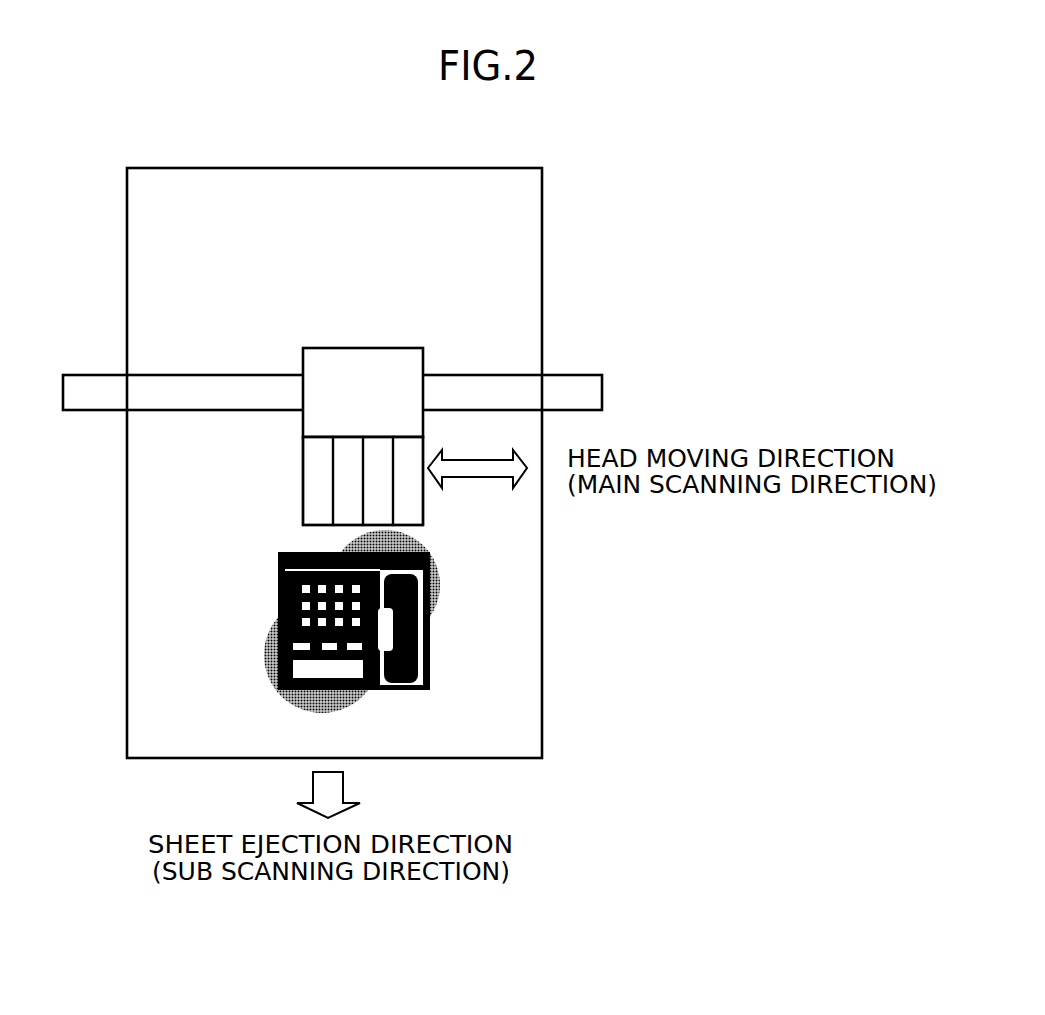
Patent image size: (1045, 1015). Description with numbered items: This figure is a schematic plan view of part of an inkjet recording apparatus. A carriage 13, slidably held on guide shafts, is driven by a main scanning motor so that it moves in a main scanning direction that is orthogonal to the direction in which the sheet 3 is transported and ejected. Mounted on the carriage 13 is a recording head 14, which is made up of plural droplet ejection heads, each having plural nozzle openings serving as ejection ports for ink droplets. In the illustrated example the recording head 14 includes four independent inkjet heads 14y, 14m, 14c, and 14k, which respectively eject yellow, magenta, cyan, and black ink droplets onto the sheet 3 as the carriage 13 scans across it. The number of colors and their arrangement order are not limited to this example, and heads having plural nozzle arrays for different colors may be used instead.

The sheet 3 is at (127, 700).
The carriage 13 is at (362, 347).
The recording head 14 is at (360, 435).
The inkjet head 14c is at (345, 463).
The inkjet head 14k is at (320, 501).
The inkjet head 14m is at (375, 513).
The inkjet head 14y is at (408, 482).